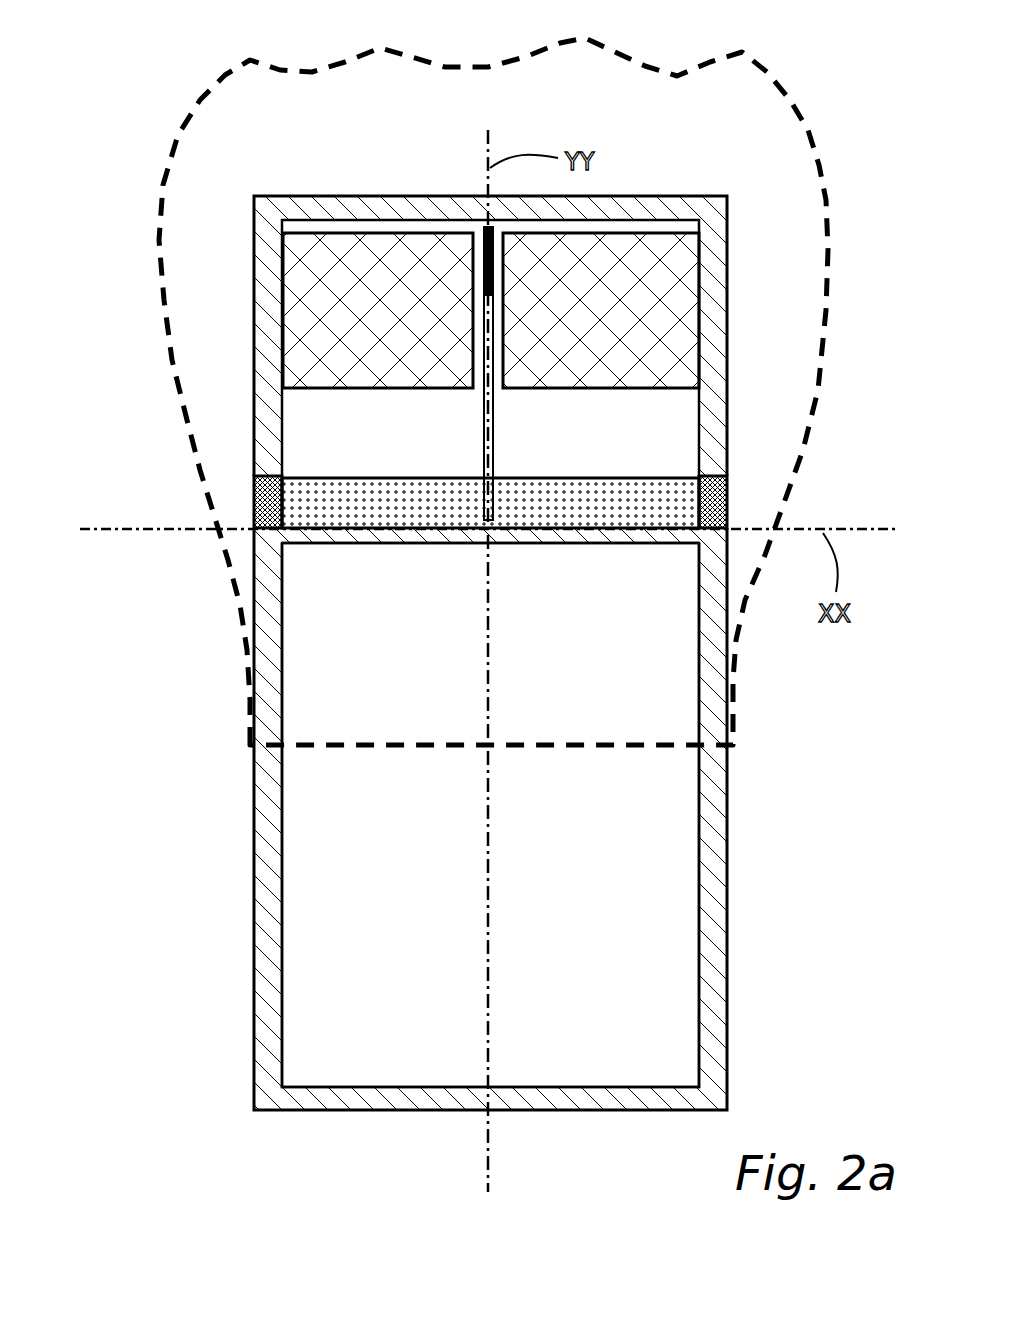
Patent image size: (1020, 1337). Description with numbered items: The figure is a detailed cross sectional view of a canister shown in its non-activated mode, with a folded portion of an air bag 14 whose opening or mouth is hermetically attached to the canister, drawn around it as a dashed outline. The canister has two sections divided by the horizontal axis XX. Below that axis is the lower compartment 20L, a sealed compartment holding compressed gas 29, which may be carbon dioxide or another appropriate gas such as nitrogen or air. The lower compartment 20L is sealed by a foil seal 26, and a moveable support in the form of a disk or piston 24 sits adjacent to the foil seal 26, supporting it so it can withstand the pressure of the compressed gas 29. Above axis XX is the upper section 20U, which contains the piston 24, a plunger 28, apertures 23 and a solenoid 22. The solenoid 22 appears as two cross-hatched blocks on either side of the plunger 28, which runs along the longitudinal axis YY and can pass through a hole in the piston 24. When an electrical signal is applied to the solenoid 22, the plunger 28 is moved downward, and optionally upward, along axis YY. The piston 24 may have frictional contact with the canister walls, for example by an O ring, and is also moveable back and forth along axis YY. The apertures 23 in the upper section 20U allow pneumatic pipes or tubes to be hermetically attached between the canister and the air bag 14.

The air bag 14 is at (148, 205).
The upper section of canister 20U is at (268, 213).
The lower compartment of canister 20L is at (252, 888).
The solenoid 22 is at (358, 388).
The apertures 23 is at (265, 497).
The piston 24 is at (553, 487).
The foil seal 26 is at (400, 543).
The plunger 28 is at (484, 428).
The compressed gas 29 is at (605, 905).